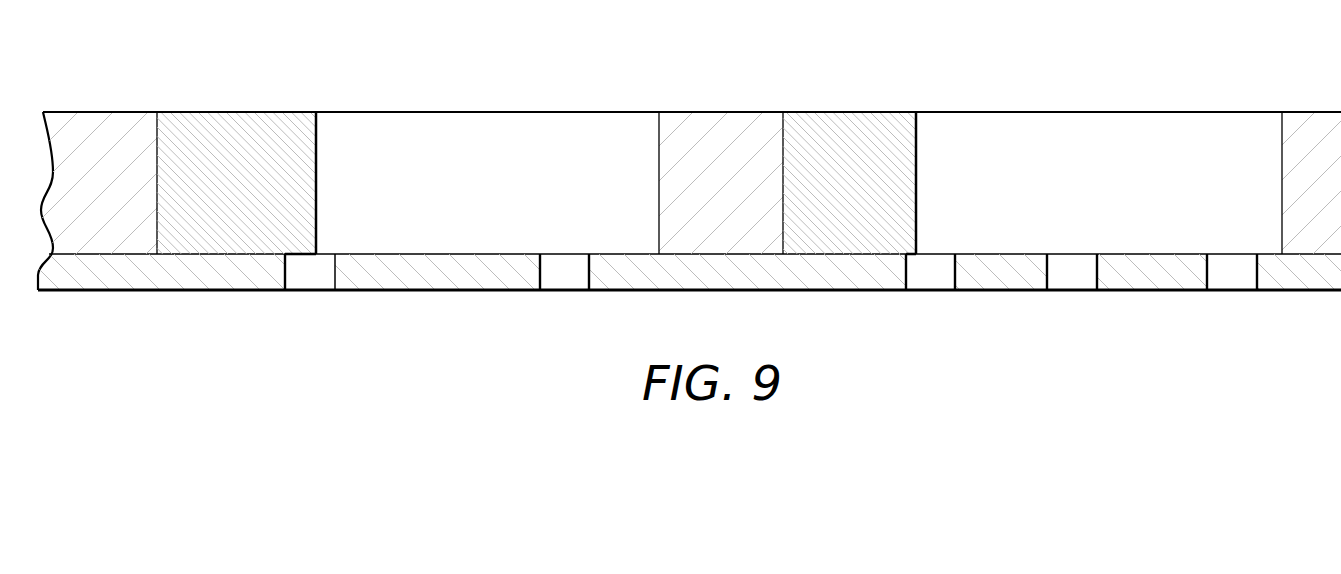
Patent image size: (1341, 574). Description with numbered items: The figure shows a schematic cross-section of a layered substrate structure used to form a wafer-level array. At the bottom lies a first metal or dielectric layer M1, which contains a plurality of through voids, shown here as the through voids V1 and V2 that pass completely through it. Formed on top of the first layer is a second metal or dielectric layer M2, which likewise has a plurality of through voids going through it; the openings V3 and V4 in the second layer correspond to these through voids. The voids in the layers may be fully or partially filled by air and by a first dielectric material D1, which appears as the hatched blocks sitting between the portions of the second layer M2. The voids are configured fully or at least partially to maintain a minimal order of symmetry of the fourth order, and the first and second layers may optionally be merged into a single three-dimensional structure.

The first metal or dielectric layer M1 is at (162, 280).
The second metal or dielectric layer M2 is at (98, 127).
The first dielectric material D1 is at (233, 127).
The through void V1 is at (308, 280).
The through void V2 is at (563, 280).
The third via (opening) V3 is at (485, 127).
The fourth via (opening) V4 is at (1097, 128).